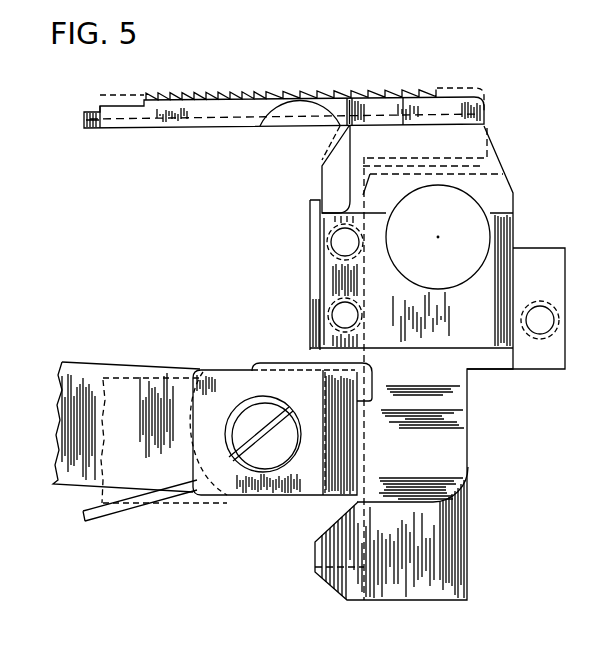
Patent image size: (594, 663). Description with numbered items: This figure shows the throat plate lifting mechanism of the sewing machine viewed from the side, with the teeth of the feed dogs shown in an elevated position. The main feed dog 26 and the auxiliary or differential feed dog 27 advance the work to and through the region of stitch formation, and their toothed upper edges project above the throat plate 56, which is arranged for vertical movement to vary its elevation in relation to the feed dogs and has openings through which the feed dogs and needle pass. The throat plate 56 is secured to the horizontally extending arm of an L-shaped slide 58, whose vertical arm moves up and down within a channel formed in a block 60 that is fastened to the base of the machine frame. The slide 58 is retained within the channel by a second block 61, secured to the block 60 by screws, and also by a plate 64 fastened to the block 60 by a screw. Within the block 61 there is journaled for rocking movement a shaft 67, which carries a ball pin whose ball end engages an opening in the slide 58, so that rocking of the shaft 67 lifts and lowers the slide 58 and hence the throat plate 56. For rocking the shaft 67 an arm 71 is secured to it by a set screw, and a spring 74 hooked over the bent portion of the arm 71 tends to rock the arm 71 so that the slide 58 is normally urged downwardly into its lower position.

The main feed dog 26 is at (177, 97).
The differential feed dog 27 is at (348, 97).
The throat plate 56 is at (124, 129).
The L-shaped slide 58 is at (332, 192).
The block 60 is at (455, 412).
The block 61 is at (270, 362).
The plate 64 is at (310, 277).
The shaft 67 is at (262, 457).
The arm 71 is at (85, 372).
The spring 74 is at (110, 516).